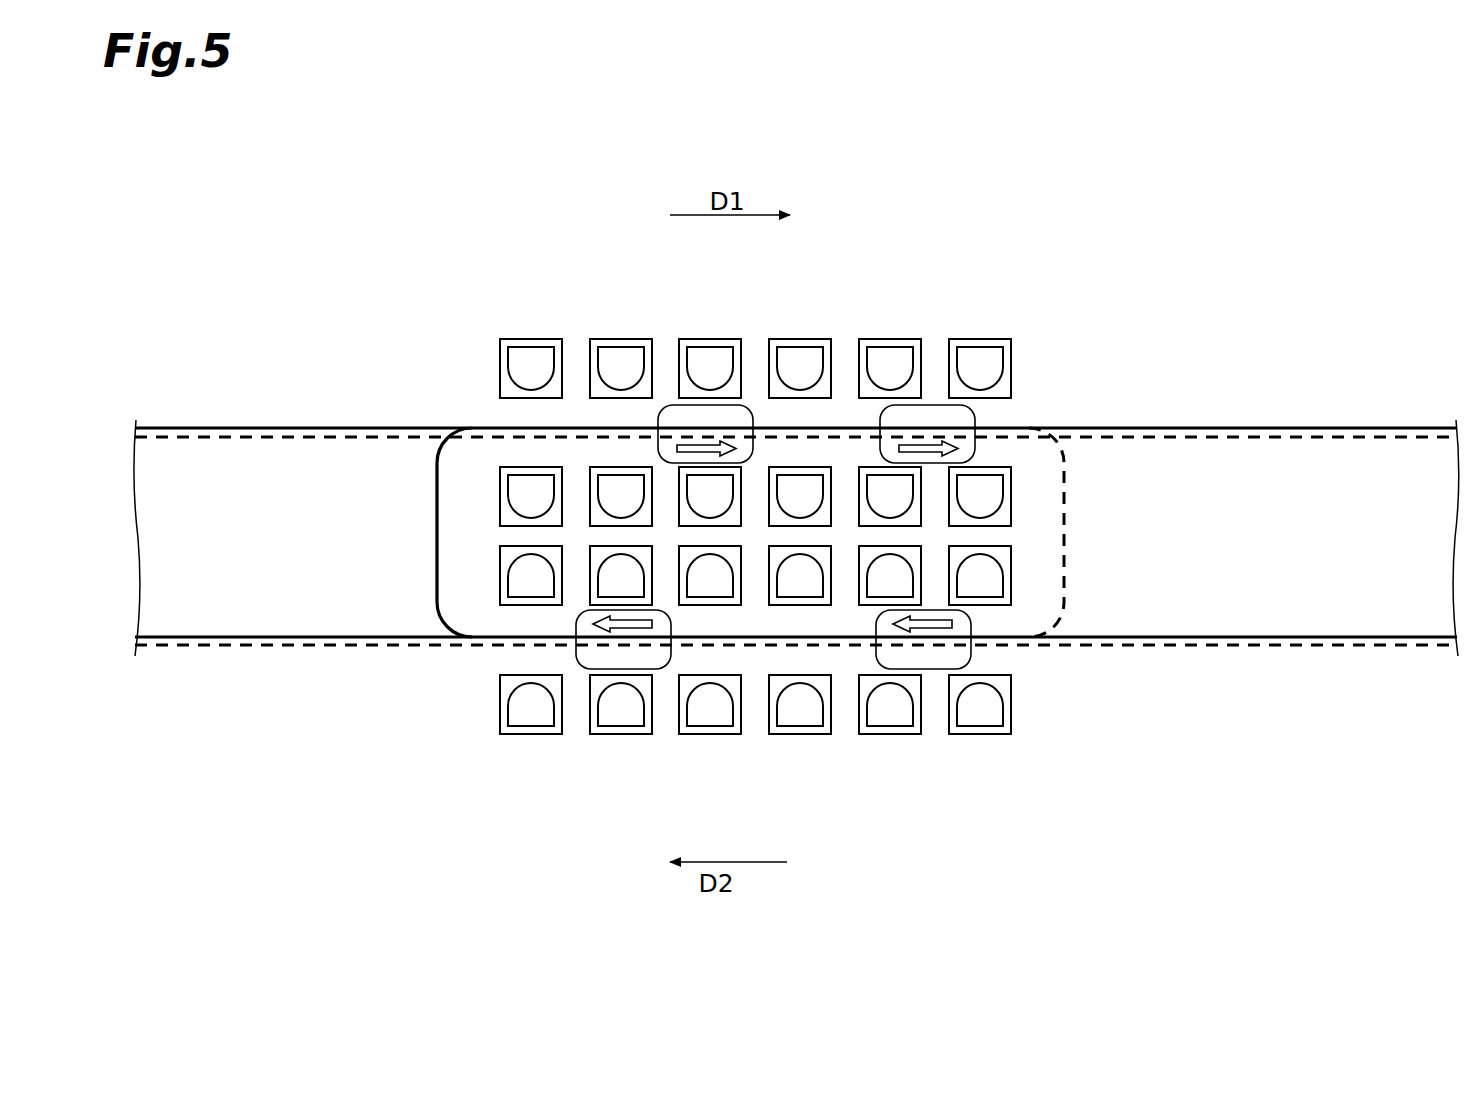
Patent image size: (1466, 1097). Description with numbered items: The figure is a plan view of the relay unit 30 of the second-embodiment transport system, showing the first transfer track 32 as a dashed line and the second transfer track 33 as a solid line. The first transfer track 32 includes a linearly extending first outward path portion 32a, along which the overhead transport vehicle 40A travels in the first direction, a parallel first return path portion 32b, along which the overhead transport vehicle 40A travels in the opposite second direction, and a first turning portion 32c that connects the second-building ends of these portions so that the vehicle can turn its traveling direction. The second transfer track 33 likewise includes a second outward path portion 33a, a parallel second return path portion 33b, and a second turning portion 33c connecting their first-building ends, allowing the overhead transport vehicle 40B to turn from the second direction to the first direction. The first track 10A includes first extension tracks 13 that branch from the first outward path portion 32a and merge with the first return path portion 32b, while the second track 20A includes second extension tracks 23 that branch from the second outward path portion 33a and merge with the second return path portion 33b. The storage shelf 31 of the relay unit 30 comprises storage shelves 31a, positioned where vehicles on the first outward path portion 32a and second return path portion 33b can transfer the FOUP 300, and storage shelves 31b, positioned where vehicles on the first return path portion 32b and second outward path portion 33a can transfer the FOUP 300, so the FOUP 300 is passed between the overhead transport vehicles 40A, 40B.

The first track 10A is at (205, 426).
The second track 20A is at (1245, 647).
The first extension track 13 is at (1210, 428).
The second extension track 23 is at (413, 428).
The relay unit 30 is at (1019, 302).
The storage shelf 31 is at (745, 540).
The storage shelf 31a is at (500, 482).
The storage shelf 31b is at (1013, 575).
The FOUP 300 is at (712, 357).
The first transfer track 32 is at (796, 544).
The first outward path portion 32a is at (318, 437).
The first return path portion 32b is at (325, 646).
The first turning portion 32c is at (1068, 505).
The second transfer track 33 is at (796, 543).
The second outward path portion 33a is at (1358, 640).
The second return path portion 33b is at (1318, 428).
The second turning portion 33c is at (437, 525).
The overhead transport vehicle 40A is at (663, 410).
The overhead transport vehicle 40B is at (930, 412).